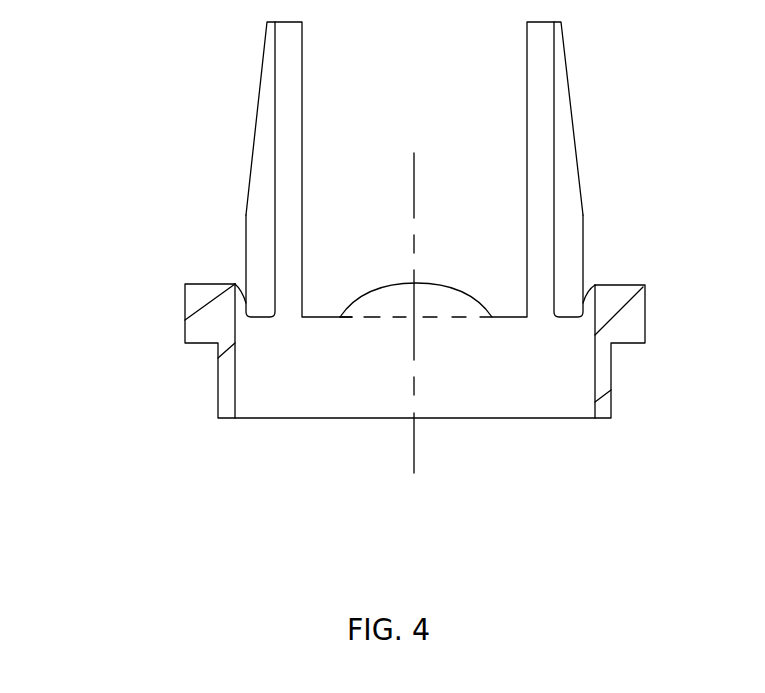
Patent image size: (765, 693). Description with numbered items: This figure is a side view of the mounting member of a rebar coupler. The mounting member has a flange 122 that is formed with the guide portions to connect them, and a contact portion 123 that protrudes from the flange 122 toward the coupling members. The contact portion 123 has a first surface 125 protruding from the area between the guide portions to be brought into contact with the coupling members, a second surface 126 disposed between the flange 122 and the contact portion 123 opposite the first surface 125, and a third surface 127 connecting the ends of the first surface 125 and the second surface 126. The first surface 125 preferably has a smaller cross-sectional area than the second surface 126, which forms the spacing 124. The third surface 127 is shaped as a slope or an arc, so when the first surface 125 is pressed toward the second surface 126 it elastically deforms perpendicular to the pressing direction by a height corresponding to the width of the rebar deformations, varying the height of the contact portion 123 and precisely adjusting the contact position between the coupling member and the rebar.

The flange 122 is at (637, 316).
The contact portion 123 is at (92, 247).
The spacing 124 is at (333, 304).
The first surface 125 is at (393, 282).
The second surface 126 is at (378, 318).
The third surface 127 is at (357, 313).